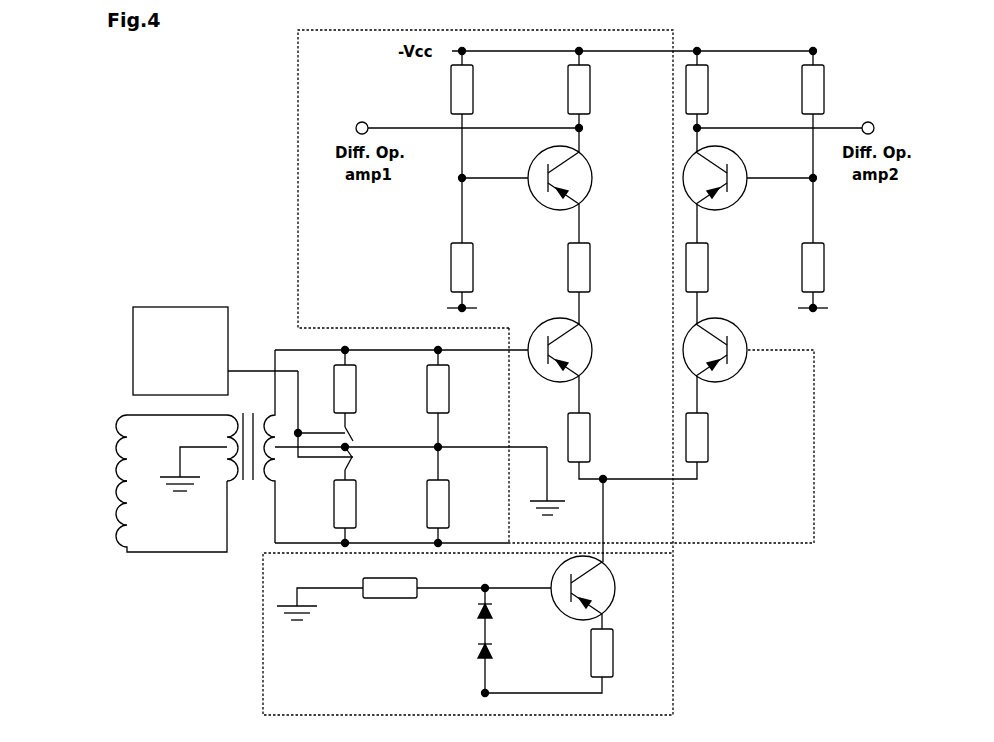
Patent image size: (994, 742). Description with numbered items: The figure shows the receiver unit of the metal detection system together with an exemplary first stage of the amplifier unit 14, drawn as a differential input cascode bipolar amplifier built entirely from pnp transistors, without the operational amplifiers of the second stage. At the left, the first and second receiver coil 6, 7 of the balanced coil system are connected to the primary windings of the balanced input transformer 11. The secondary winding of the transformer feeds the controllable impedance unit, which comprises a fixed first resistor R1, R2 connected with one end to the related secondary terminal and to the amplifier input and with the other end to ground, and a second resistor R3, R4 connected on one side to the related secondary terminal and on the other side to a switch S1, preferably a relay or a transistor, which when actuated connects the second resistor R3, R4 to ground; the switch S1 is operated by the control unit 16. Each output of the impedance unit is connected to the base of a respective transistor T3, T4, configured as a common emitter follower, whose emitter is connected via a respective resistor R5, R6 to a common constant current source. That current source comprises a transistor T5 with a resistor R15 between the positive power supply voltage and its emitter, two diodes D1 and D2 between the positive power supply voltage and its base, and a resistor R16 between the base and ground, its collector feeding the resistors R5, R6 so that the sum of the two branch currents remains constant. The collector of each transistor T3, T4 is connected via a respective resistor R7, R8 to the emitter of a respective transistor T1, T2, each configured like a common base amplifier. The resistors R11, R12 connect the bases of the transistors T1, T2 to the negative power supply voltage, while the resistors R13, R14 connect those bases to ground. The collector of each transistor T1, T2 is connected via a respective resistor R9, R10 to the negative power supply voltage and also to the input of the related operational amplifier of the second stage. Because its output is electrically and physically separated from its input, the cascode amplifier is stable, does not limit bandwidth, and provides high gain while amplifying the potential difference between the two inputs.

The first receiver coil 6 is at (120, 448).
The second receiver coil 7 is at (125, 512).
The balanced input transformer 11 is at (246, 490).
The amplifier unit 14 is at (464, 634).
The control unit 16 is at (190, 360).
The fixed first resistor R1 is at (453, 415).
The fixed first resistor R2 is at (453, 511).
The second resistor R3 is at (360, 381).
The second resistor R4 is at (360, 506).
The emitter resistor R5 is at (593, 437).
The emitter resistor R6 is at (711, 437).
The collector resistor R7 is at (594, 267).
The collector resistor R8 is at (712, 267).
The collector load resistor R9 is at (594, 82).
The collector load resistor R10 is at (718, 82).
The base bias resistor R11 is at (482, 82).
The base bias resistor R12 is at (833, 82).
The base bias resistor R13 is at (480, 277).
The base bias resistor R14 is at (831, 277).
The emitter resistor of current source R15 is at (621, 653).
The base resistor of current source R16 is at (424, 582).
The common base transistor T1 is at (573, 178).
The common base transistor T2 is at (728, 178).
The input transistor T3 is at (573, 350).
The input transistor T4 is at (728, 350).
The current source transistor T5 is at (597, 588).
The diode D1 is at (500, 613).
The diode D2 is at (500, 653).
The switch S1 is at (325, 447).